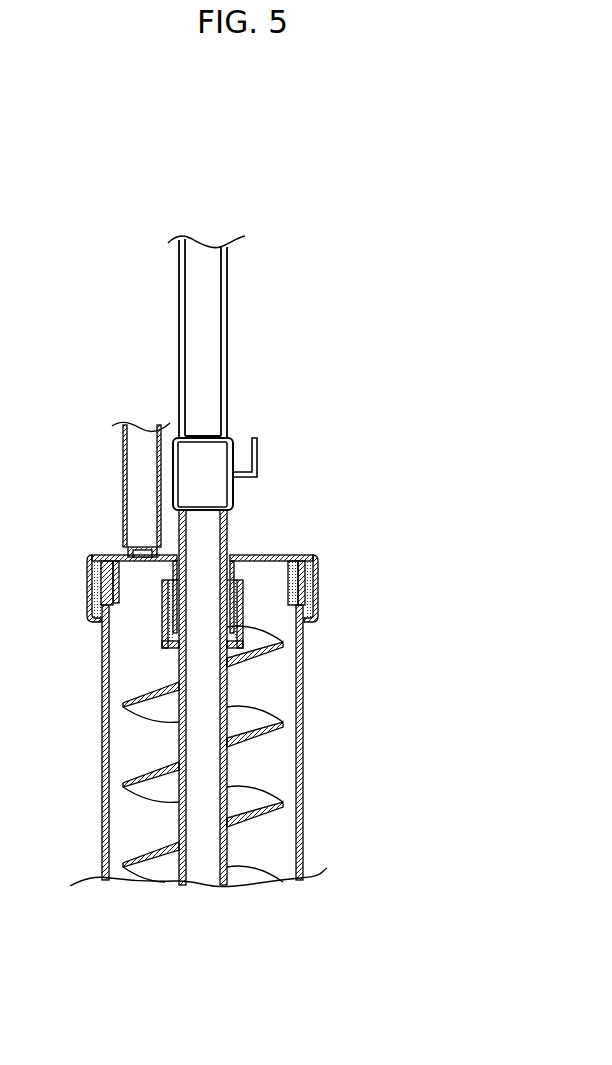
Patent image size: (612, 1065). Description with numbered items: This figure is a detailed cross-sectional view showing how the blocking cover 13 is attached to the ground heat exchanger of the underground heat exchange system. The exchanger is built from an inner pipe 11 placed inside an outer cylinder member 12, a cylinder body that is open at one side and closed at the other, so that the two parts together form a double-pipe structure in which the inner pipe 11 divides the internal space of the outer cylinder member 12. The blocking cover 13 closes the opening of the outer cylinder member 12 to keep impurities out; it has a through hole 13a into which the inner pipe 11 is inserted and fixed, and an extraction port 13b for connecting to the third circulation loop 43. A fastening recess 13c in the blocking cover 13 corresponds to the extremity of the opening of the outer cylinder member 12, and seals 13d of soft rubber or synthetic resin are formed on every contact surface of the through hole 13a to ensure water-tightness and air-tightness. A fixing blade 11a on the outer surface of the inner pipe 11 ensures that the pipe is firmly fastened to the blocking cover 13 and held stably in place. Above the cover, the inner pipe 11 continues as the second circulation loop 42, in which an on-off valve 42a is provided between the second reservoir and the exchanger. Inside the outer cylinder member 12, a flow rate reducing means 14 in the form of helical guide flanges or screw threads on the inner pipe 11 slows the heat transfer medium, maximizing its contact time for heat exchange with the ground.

The inner pipe 11 is at (125, 697).
The fixing blade 11a is at (163, 624).
The outer cylinder member 12 is at (303, 727).
The blocking cover 13 is at (276, 575).
The through hole 13a is at (230, 572).
The extraction port 13b is at (147, 547).
The fastening recess 13c is at (318, 593).
The seals 13d is at (240, 632).
The flow rate reducing means 14 is at (257, 740).
The second circulation loop 42 is at (227, 302).
The on-off valve 42a is at (257, 455).
The third circulation loop 43 is at (123, 466).